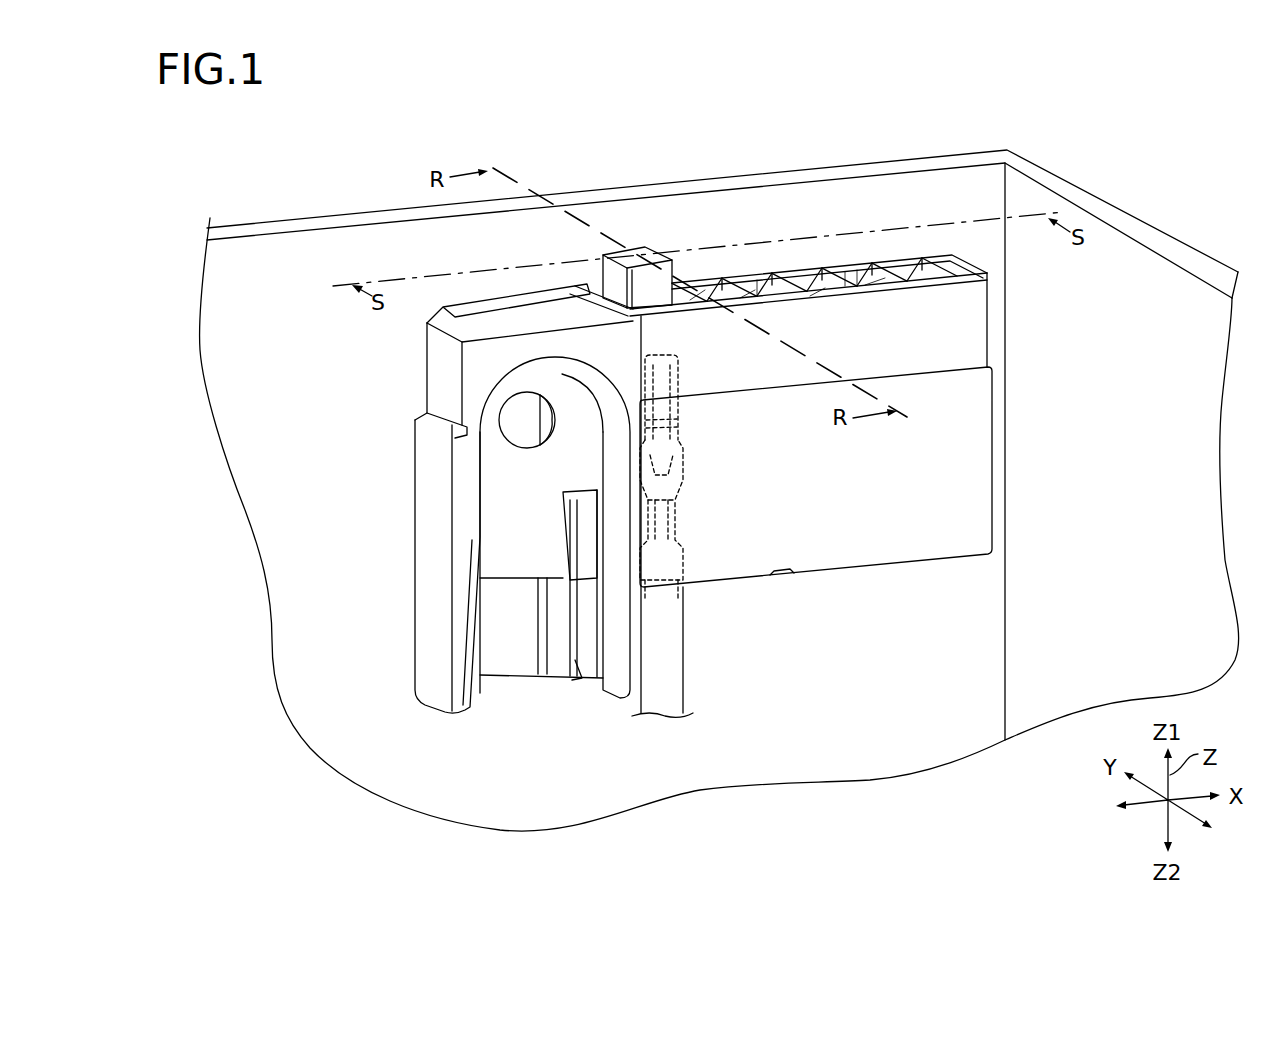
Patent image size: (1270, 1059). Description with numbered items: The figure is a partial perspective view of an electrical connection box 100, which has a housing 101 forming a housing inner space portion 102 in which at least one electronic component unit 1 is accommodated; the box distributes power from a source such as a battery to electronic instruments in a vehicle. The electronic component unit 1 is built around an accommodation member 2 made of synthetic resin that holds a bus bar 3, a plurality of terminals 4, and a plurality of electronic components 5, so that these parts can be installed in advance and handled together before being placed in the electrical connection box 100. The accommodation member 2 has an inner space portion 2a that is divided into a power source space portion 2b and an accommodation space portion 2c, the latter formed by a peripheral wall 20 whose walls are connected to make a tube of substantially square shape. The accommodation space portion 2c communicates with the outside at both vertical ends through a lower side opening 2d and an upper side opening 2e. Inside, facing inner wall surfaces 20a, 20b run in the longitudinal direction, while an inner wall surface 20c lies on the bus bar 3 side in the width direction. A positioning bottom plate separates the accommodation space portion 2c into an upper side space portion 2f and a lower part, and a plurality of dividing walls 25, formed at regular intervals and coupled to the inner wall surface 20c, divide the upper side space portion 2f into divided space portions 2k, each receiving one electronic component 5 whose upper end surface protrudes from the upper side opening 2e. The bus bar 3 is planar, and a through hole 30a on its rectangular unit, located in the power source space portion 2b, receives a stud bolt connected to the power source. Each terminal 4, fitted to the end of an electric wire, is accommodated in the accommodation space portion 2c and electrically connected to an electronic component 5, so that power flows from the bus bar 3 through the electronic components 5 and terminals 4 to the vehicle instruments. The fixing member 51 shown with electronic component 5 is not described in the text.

The electronic component unit 1 is at (708, 216).
The accommodation member 2 is at (861, 392).
The peripheral wall 20 is at (955, 527).
The inner wall surface 20a is at (963, 258).
The inner wall surface 20b is at (590, 276).
The inner wall surface 20c is at (818, 293).
The inner space portion 2a is at (874, 270).
The power source space portion 2b is at (510, 605).
The accommodation space portion 2c is at (750, 296).
The lower side opening 2d is at (766, 581).
The upper side opening 2e is at (697, 293).
The upper side space portion 2f is at (845, 285).
The divided space portion 2k is at (803, 283).
The dividing wall 25 is at (800, 292).
The bus bar 3 is at (482, 492).
The through hole 30a is at (522, 428).
The terminal 4 is at (690, 490).
The electronic component 5 is at (575, 270).
The fixing member body 51 is at (603, 253).
The electrical connection box 100 is at (298, 215).
The housing 101 is at (357, 245).
The housing inner space portion 102 is at (1105, 335).